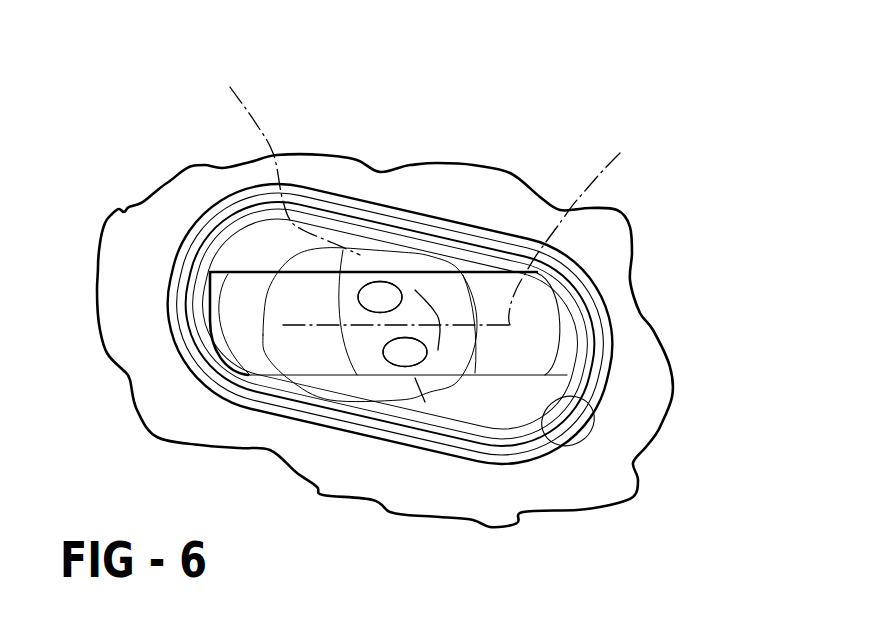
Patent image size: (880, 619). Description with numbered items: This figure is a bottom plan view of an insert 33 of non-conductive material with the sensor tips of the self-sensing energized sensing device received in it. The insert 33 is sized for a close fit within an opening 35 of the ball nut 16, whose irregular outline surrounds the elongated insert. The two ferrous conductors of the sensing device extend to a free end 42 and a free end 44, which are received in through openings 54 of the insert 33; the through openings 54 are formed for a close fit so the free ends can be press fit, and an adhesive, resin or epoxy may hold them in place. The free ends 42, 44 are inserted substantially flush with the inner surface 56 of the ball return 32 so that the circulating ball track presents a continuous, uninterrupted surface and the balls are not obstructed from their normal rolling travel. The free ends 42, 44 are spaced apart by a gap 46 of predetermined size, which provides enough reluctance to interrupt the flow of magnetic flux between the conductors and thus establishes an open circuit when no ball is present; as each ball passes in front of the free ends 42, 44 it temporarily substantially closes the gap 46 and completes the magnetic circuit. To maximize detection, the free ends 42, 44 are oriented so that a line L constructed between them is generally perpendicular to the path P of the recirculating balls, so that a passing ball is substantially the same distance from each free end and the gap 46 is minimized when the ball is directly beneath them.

The ball nut 16 is at (633, 270).
The ball return 32 is at (337, 207).
The insert 33 is at (533, 337).
The opening 35 is at (578, 458).
The free end 42 is at (382, 282).
The free end 44 is at (420, 363).
The gap 46 is at (441, 312).
The through opening 54 is at (362, 308).
The inner surface 56 is at (240, 307).
The line L is at (285, 158).
The path P is at (476, 229).